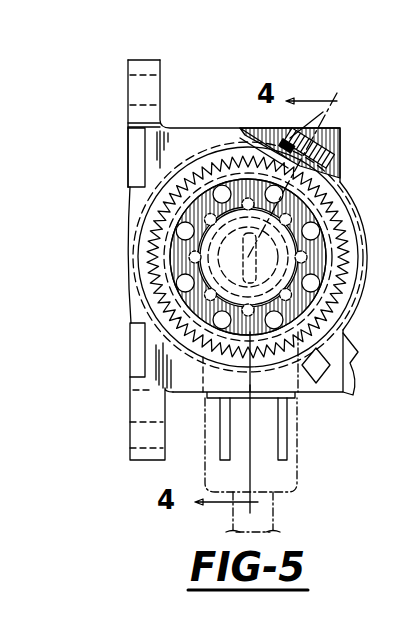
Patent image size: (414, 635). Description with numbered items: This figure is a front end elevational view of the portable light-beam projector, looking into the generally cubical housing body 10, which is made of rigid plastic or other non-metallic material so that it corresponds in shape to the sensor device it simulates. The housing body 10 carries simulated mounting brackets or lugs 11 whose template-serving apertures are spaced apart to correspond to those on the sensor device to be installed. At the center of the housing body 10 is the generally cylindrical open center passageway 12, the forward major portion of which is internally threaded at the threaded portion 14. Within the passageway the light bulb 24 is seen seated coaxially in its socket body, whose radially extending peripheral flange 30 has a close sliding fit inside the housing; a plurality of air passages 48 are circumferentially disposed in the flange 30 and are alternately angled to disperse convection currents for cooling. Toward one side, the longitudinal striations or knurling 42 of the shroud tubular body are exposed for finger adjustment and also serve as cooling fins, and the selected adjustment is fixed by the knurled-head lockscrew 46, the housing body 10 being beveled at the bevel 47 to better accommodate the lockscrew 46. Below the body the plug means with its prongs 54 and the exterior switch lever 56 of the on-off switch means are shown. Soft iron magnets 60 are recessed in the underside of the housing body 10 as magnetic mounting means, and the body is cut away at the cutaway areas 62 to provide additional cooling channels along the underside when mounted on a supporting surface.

The housing body 10 is at (188, 132).
The simulated mounting brackets or lugs 11 is at (161, 62).
The center passageway 12 is at (200, 157).
The threaded portion 14 is at (248, 257).
The light bulb 24 is at (300, 215).
The peripheral flange 30 is at (412, 330).
The striations or knurling 42 is at (318, 250).
The lockscrew 46 is at (330, 140).
The bevel 47 is at (270, 126).
The air passages 48 is at (185, 286).
The prongs 54 is at (223, 423).
The switch lever 56 is at (352, 396).
The soft iron magnets 60 is at (134, 162).
The cutaway areas 62 is at (137, 198).